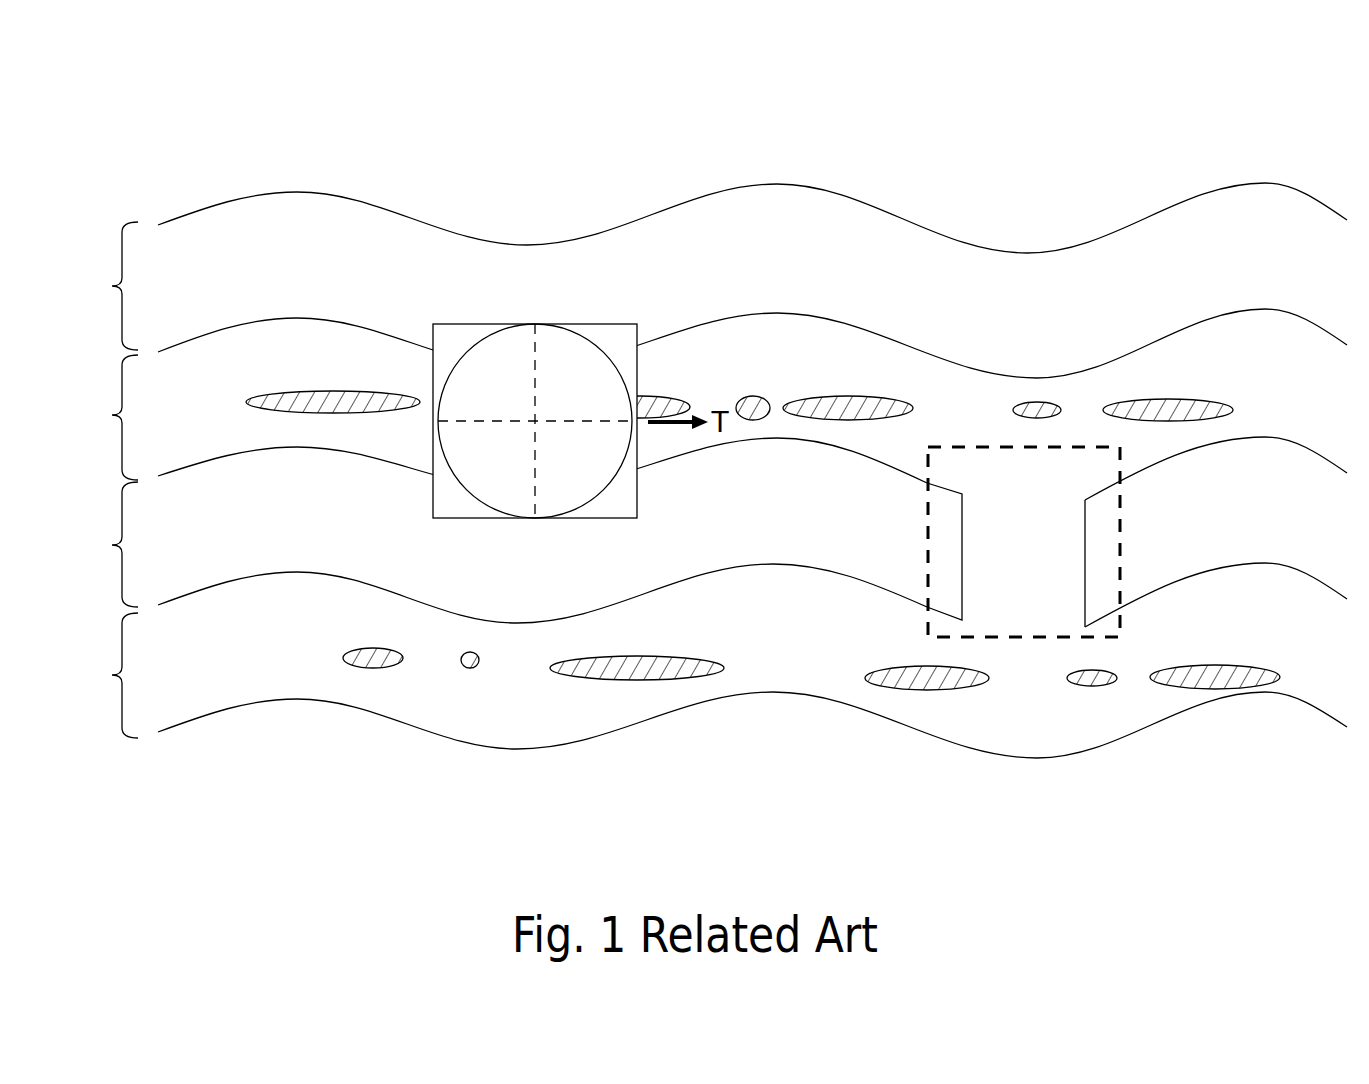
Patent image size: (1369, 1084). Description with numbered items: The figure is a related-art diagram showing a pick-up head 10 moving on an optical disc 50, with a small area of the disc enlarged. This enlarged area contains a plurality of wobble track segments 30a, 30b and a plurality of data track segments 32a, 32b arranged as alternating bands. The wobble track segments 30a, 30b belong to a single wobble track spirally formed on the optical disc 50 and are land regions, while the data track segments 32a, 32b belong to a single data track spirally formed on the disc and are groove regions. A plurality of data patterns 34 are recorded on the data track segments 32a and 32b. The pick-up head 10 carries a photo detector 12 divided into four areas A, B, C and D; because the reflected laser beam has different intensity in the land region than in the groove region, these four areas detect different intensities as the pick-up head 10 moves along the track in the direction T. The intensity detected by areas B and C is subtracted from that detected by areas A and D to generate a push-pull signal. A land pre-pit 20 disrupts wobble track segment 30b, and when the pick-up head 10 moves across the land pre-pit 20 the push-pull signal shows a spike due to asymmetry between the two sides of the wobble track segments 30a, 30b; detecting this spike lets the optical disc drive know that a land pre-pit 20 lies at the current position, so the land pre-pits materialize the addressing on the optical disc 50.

The pick-up head 10 is at (457, 323).
The photo detector 12 is at (600, 348).
The land pre-pit 20 is at (1122, 558).
The wobble track segment 30a is at (112, 286).
The wobble track segment 30b is at (112, 545).
The data track segment 32a is at (112, 415).
The data track segment 32b is at (112, 675).
The data pattern 34 is at (1231, 408).
The optical disc 50 is at (1200, 143).